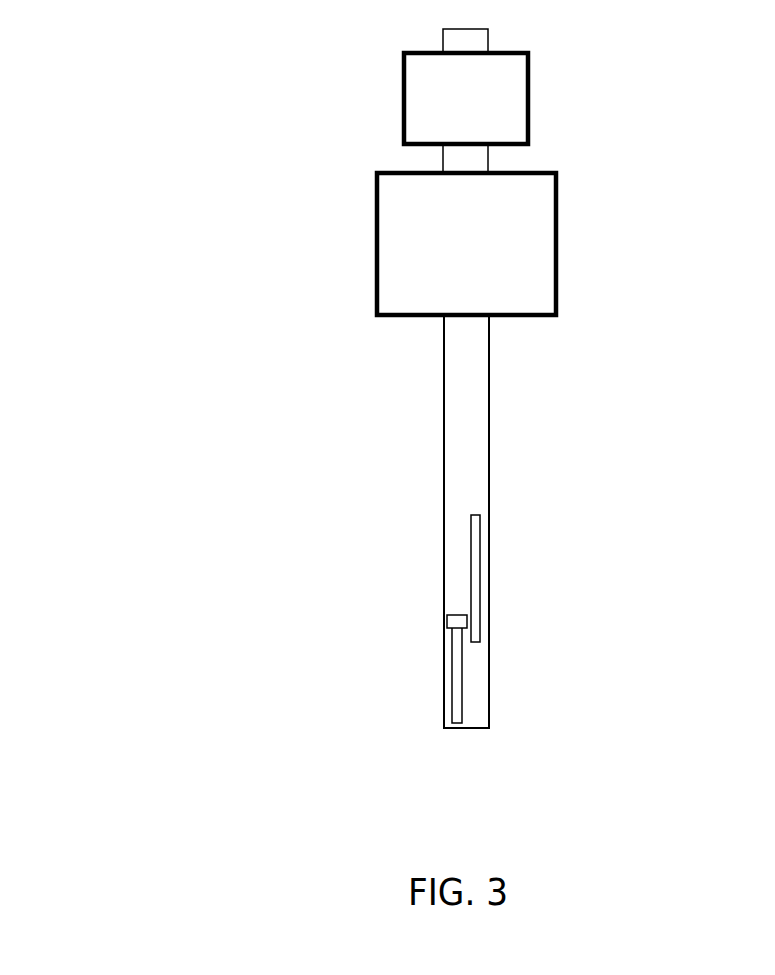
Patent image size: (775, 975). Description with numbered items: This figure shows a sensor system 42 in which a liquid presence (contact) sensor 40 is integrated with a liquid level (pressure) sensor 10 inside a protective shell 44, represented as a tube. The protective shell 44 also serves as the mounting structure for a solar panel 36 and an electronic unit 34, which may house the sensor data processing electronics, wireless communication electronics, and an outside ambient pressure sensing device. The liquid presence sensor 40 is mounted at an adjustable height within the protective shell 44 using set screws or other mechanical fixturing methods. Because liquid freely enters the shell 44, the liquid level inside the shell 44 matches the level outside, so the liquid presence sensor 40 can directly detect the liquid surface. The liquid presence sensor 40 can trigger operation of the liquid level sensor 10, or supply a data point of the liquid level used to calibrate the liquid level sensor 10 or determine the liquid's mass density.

The sensor system 42 is at (180, 235).
The solar panel 36 is at (548, 87).
The electronic unit 34 is at (567, 232).
The protective shell 44 is at (442, 407).
The liquid presence sensor 40 is at (479, 577).
The liquid level sensor 10 is at (445, 660).